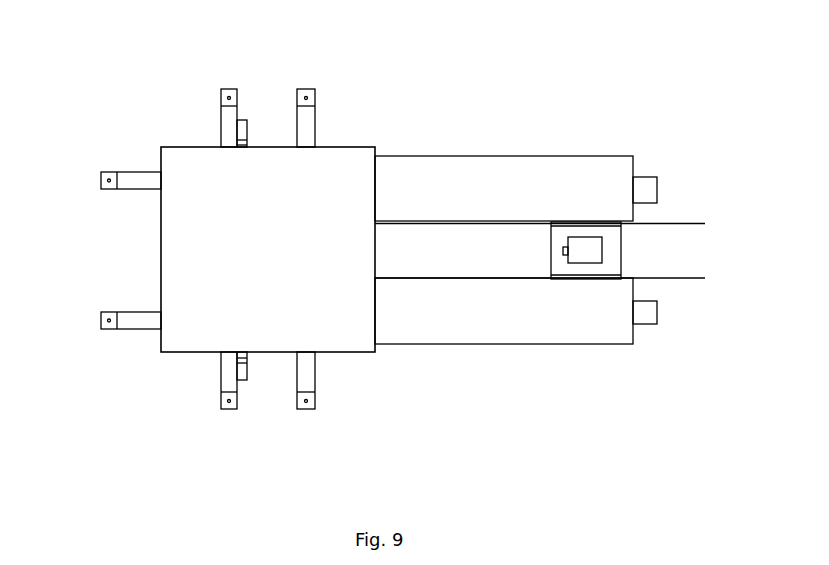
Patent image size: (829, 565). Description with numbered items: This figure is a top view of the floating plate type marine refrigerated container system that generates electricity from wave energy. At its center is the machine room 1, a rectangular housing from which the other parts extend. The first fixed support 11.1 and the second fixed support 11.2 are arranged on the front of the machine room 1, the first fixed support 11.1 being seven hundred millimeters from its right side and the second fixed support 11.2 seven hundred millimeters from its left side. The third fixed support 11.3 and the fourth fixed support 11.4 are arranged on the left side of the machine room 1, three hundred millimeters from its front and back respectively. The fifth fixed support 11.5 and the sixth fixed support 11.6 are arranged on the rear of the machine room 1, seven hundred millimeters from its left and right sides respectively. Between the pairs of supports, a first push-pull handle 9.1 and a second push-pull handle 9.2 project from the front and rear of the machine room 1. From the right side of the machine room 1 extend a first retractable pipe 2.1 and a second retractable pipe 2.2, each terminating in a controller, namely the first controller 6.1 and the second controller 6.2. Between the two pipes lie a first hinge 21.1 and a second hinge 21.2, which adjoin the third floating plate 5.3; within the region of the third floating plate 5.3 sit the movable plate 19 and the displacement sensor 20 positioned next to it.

The machine room 1 is at (375, 147).
The first fixed support 11.1 is at (305, 409).
The second fixed support 11.2 is at (229, 409).
The third fixed support 11.3 is at (101, 320).
The fourth fixed support 11.4 is at (101, 180).
The fifth fixed support 11.5 is at (229, 89).
The sixth fixed support 11.6 is at (305, 89).
The first push-pull handle 9.1 is at (248, 369).
The second push-pull handle 9.2 is at (248, 135).
The first retractable pipe 2.1 is at (633, 344).
The second retractable pipe 2.2 is at (633, 156).
The first controller 6.1 is at (657, 324).
The second controller 6.2 is at (657, 177).
The first hinge 21.1 is at (564, 281).
The second hinge 21.2 is at (564, 222).
The third floating plate 5.3 is at (551, 250).
The movable plate 19 is at (602, 249).
The displacement sensor 20 is at (563, 248).